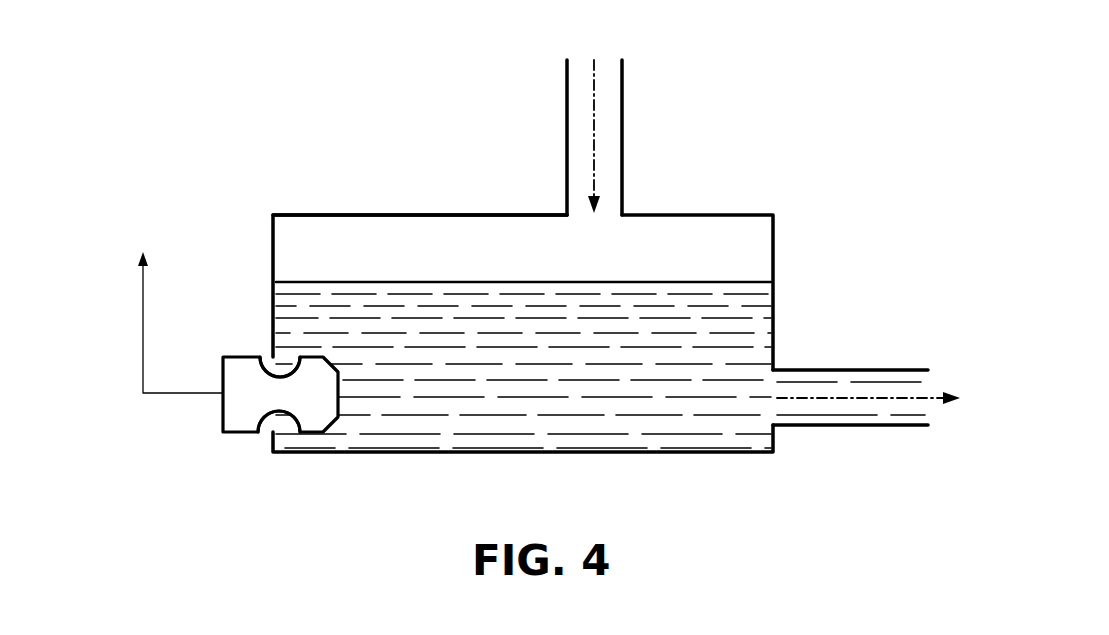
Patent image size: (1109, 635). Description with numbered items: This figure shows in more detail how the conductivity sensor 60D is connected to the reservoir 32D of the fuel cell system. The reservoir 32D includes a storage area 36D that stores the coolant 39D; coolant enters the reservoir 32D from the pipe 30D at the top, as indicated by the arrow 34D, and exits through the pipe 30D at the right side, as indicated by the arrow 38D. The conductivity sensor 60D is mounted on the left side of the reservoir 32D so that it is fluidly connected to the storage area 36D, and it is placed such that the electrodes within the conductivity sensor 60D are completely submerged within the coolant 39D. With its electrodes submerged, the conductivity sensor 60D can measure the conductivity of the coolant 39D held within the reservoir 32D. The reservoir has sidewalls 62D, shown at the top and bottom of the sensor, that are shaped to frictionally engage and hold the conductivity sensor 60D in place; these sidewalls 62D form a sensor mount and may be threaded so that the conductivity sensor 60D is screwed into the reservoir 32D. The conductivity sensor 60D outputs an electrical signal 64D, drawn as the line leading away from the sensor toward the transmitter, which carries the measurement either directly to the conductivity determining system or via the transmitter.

The flow conduit / pipe 30D is at (572, 106).
The reservoir 32D is at (390, 213).
The arrow 34D is at (596, 147).
The storage area 36D is at (703, 247).
The arrow 38D is at (885, 396).
The coolant 39D is at (524, 372).
The conductivity sensor 60D is at (235, 418).
The sidewalls 62D is at (262, 355).
The electrical signal 64D is at (143, 330).